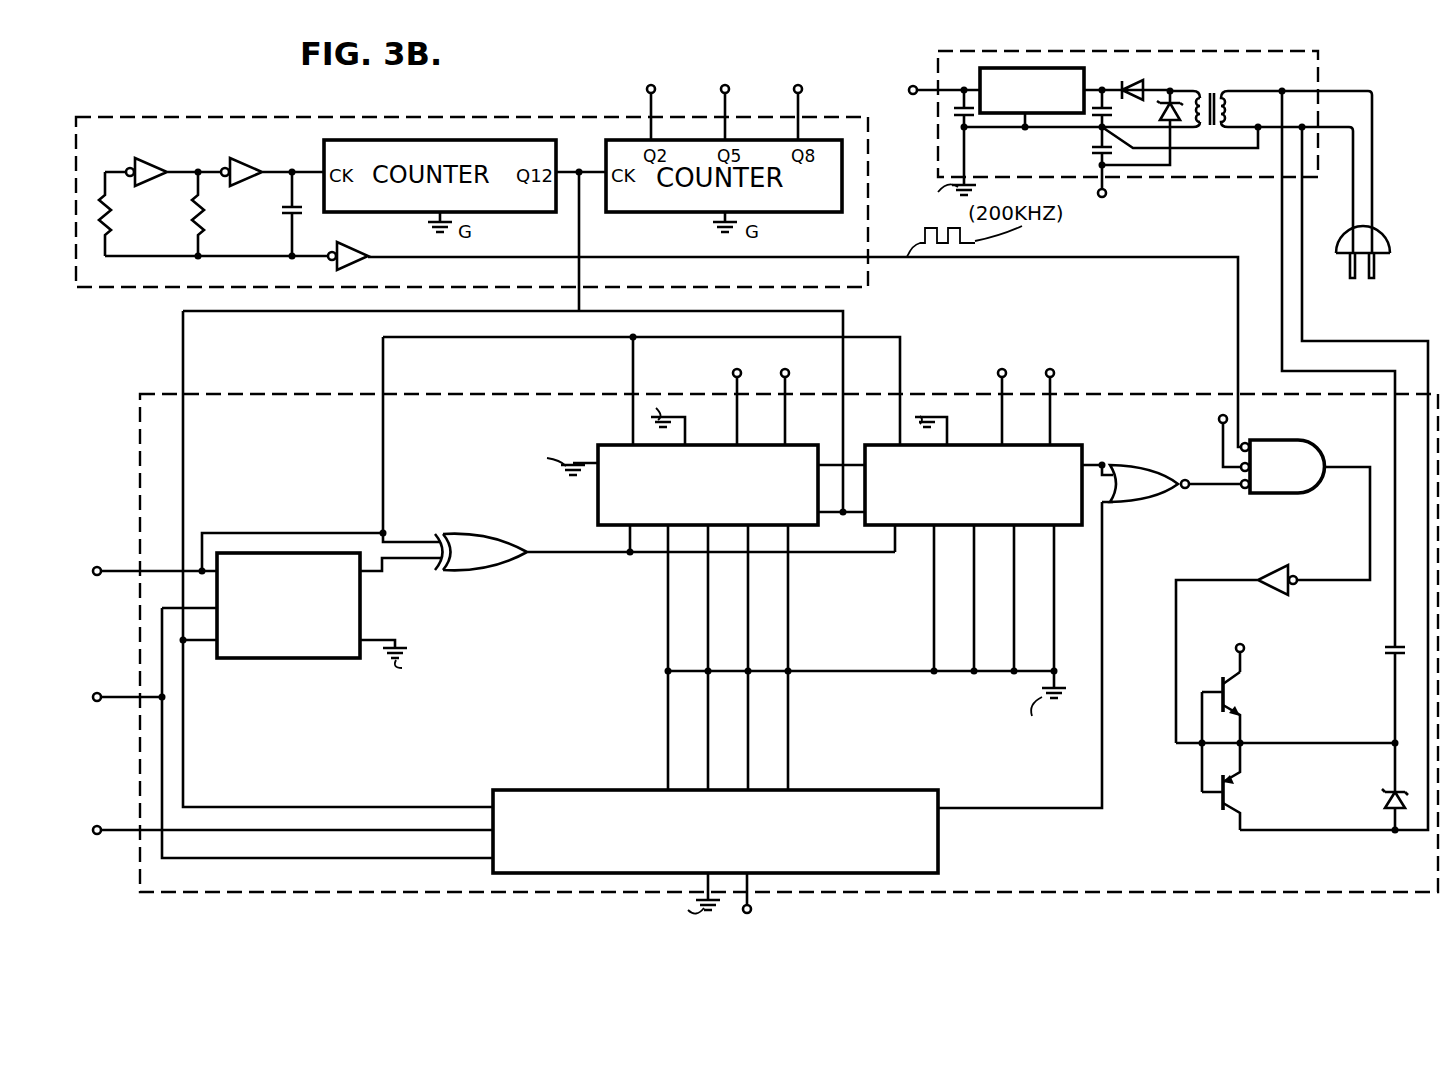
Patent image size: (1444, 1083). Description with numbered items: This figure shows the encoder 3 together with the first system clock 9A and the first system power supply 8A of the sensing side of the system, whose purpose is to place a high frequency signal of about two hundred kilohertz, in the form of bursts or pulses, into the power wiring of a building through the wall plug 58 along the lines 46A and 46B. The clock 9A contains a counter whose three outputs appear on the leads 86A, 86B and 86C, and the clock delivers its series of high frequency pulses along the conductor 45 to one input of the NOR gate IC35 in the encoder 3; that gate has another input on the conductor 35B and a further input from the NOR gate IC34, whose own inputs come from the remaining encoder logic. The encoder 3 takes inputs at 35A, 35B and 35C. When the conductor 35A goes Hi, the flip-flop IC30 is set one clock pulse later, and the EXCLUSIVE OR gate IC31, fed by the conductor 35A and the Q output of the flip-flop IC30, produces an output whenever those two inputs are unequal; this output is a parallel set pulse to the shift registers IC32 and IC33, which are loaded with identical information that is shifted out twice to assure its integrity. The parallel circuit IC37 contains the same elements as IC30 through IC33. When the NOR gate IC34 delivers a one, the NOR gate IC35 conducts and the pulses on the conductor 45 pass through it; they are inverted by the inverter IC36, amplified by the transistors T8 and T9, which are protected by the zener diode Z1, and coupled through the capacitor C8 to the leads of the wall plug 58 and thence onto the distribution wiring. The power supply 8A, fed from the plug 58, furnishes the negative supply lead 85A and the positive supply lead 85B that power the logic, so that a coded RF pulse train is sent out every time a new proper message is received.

The first system clock 9A is at (228, 114).
The counter output lead 86A is at (651, 84).
The counter output lead 86B is at (726, 84).
The counter output lead 86C is at (800, 84).
The conductor 45 is at (1077, 259).
The first system power supply 8A is at (1322, 64).
The negative power supply lead 85A is at (1107, 196).
The positive power supply lead 85B is at (913, 86).
The wall plug 58 is at (1377, 236).
The power line 46A is at (1280, 241).
The power line 46B is at (1303, 312).
The encoder 3 is at (1016, 895).
The conductor 35A is at (95, 576).
The conductor 35B is at (95, 702).
The input lead 35C is at (95, 835).
The flip-flop IC30 is at (300, 659).
The EXCLUSIVE OR gate IC31 is at (508, 574).
The shift register IC32 is at (597, 506).
The shift register IC33 is at (913, 527).
The NOR gate IC34 is at (1152, 506).
The NOR gate IC35 is at (1290, 441).
The inverter IC36 is at (1280, 596).
The parallel circuit IC37 is at (940, 840).
The transistor T8 is at (1232, 680).
The transistor T9 is at (1232, 800).
The capacitor C8 is at (1392, 643).
The zener diode Z1 is at (1382, 797).